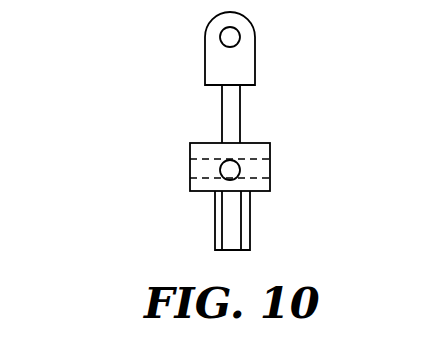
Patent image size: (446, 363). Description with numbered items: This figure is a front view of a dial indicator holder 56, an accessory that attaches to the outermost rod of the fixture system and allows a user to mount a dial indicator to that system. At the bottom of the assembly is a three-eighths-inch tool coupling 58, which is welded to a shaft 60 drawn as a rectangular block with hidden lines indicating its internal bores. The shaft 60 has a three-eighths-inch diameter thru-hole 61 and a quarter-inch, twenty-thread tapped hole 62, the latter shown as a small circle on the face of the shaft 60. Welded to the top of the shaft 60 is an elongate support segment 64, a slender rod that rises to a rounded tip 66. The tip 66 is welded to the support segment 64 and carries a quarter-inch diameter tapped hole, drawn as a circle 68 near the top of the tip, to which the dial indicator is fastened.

The dial indicator holder 56 is at (157, 108).
The tool coupling 58 is at (228, 237).
The shaft 60 is at (262, 186).
The thru-hole 61 is at (250, 160).
The tapped hole 62 is at (231, 170).
The elongate support segment 64 is at (229, 115).
The tip 66 is at (229, 68).
The hole 68 is at (231, 37).